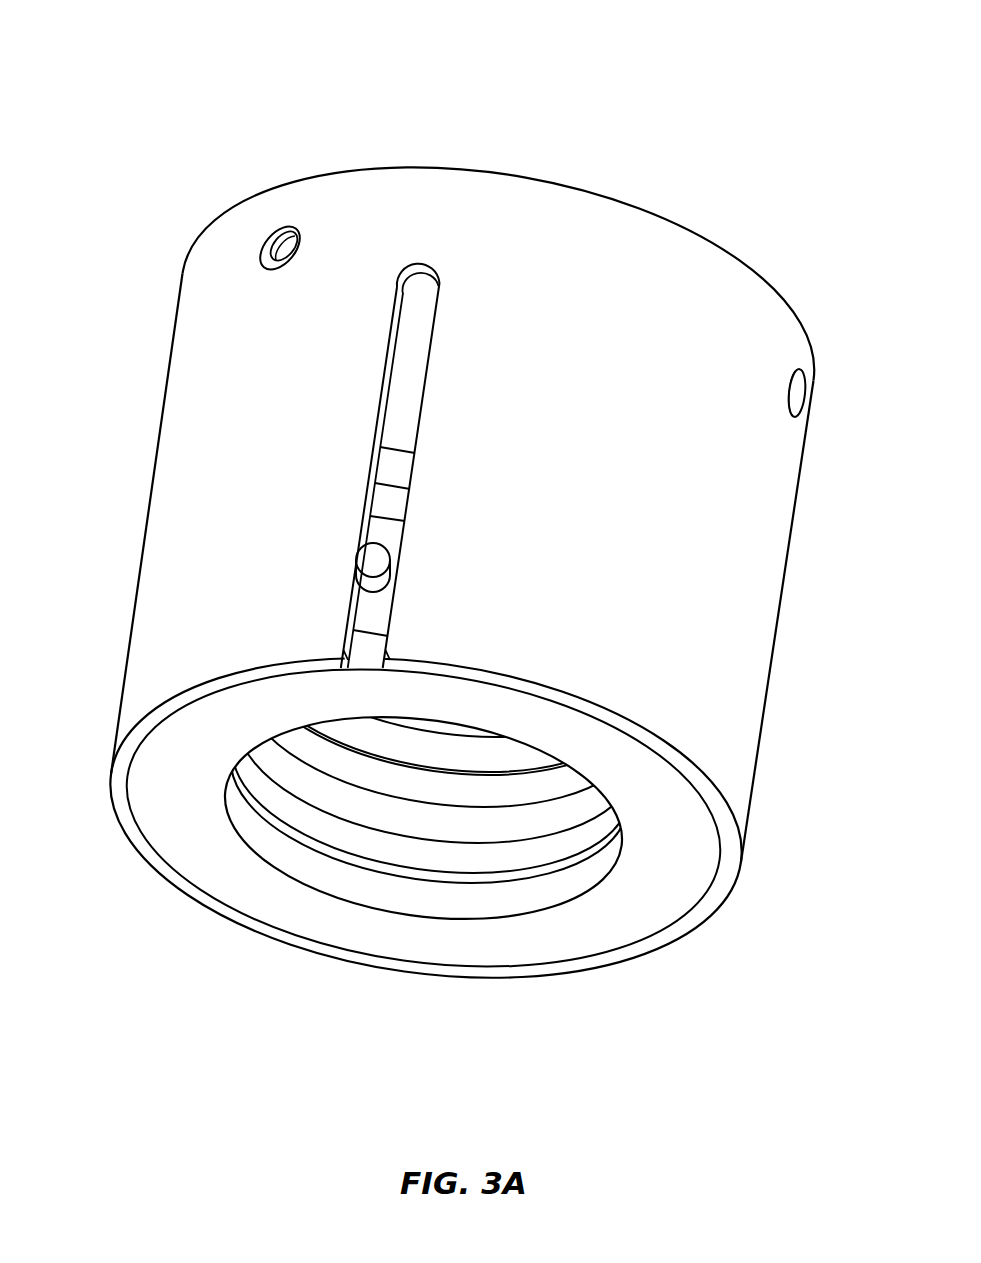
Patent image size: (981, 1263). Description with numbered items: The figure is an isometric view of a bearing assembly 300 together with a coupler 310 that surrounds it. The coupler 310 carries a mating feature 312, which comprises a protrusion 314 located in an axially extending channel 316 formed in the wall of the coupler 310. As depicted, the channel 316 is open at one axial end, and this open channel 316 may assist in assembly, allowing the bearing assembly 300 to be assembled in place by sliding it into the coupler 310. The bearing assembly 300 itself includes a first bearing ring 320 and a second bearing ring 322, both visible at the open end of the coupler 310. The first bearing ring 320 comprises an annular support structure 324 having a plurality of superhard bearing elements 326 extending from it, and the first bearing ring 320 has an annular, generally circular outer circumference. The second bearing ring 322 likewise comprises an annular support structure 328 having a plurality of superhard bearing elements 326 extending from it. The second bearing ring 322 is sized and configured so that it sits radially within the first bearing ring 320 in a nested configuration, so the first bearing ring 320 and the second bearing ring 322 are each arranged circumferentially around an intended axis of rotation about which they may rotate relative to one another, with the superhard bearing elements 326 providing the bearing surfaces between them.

The bearing assembly 300 is at (787, 125).
The coupler 310 is at (652, 257).
The mating feature 312 is at (340, 553).
The protrusion 314 is at (376, 556).
The axially extending channel 316 is at (422, 260).
The first bearing ring 320 is at (158, 813).
The second bearing ring 322 is at (350, 802).
The annular support structure 324 is at (660, 886).
The superhard bearing elements 326 is at (533, 883).
The annular support structure 328 is at (440, 826).